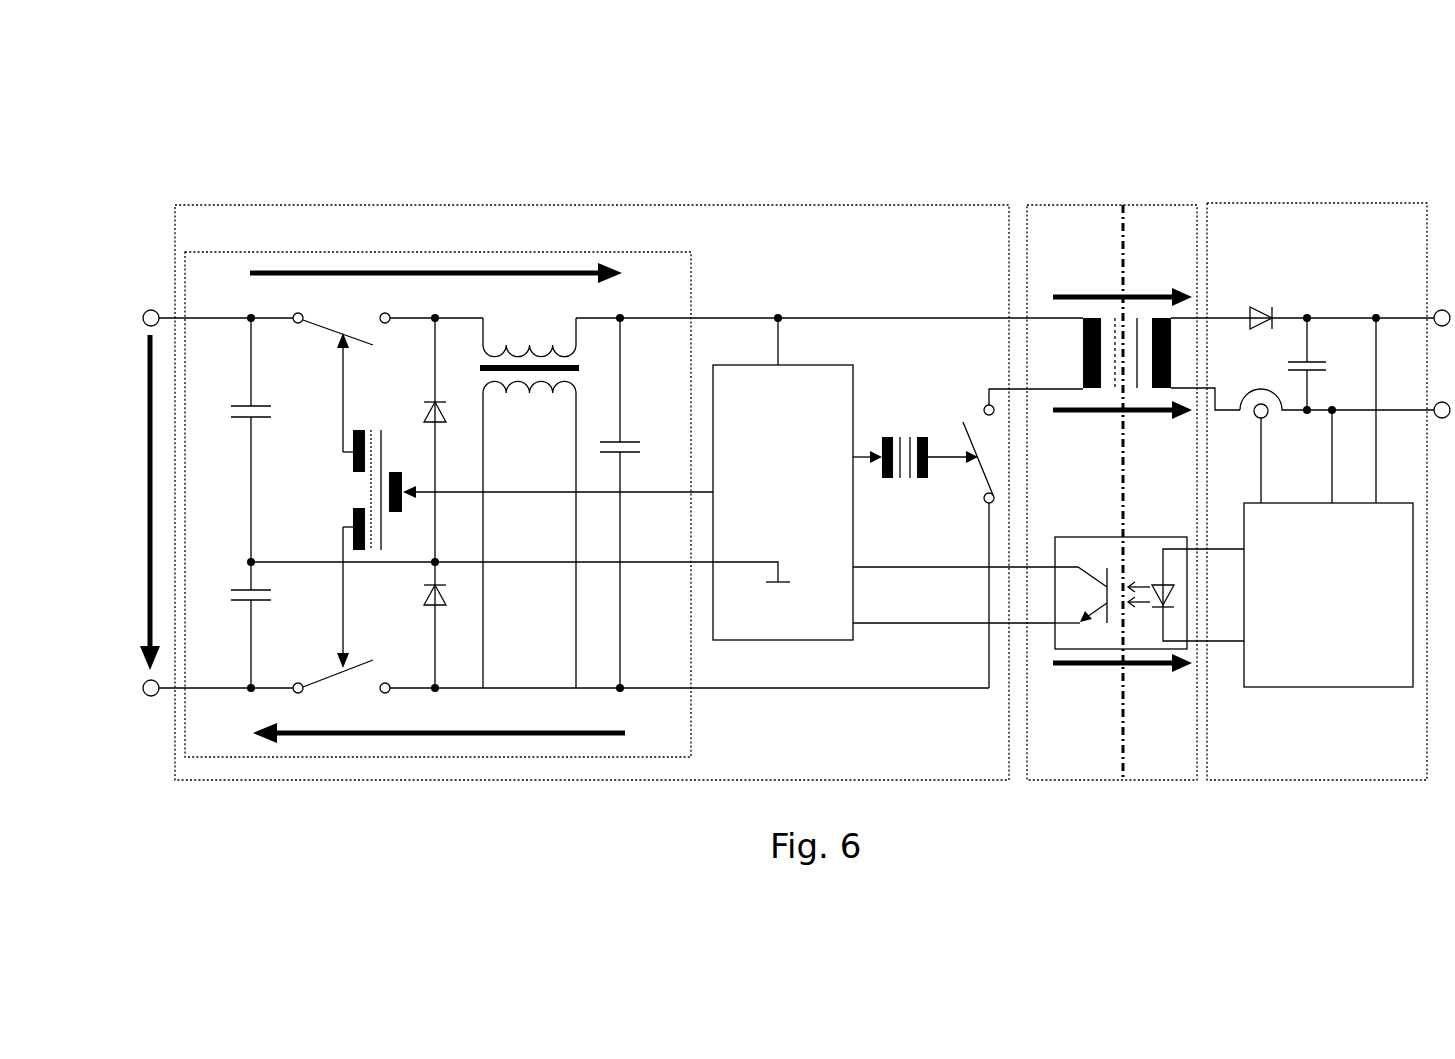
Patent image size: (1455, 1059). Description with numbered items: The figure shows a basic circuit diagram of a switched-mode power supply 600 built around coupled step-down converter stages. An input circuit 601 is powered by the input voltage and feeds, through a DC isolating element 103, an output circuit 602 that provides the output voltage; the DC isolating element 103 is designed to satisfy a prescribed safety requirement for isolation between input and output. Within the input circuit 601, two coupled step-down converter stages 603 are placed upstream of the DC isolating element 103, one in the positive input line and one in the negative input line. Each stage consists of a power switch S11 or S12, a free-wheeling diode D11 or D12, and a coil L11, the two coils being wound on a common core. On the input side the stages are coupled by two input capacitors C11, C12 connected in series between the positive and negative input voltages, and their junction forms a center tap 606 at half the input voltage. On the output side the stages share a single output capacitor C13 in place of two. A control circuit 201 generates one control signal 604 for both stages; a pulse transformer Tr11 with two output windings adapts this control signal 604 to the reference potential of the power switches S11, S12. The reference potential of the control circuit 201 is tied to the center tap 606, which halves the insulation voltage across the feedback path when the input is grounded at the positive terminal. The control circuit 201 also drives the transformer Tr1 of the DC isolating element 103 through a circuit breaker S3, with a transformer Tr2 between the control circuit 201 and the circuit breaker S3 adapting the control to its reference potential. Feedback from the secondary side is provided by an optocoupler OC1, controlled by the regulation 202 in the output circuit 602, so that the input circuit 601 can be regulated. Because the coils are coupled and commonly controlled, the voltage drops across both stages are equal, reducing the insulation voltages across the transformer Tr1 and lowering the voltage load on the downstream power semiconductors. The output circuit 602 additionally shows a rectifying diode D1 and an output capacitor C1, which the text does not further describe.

The switched-mode power supply 600 is at (1203, 125).
The input circuit 601 is at (629, 476).
The output circuit 602 is at (1328, 476).
The coupled step-down converter stages 603 is at (449, 489).
The control signal 604 is at (550, 452).
The center tap 606 is at (247, 552).
The DC isolating element 103 is at (1229, 476).
The control circuit 201 is at (884, 479).
The regulation 202 is at (1328, 595).
The input capacitor C11 is at (235, 440).
The input capacitor C12 is at (235, 625).
The output capacitor C13 is at (636, 503).
The power switch S11 is at (341, 316).
The power switch S12 is at (341, 689).
The circuit breaker S3 is at (1014, 538).
The free-wheeling diode D11 is at (414, 440).
The free-wheeling diode D12 is at (414, 625).
The output diode D1 is at (1260, 306).
The pulse transformer Tr11 is at (507, 500).
The transformer Tr1 is at (1235, 364).
The transformer Tr2 is at (915, 443).
The coil L11 is at (529, 503).
The output capacitor C1 is at (1326, 364).
The optocoupler OC1 is at (1148, 578).